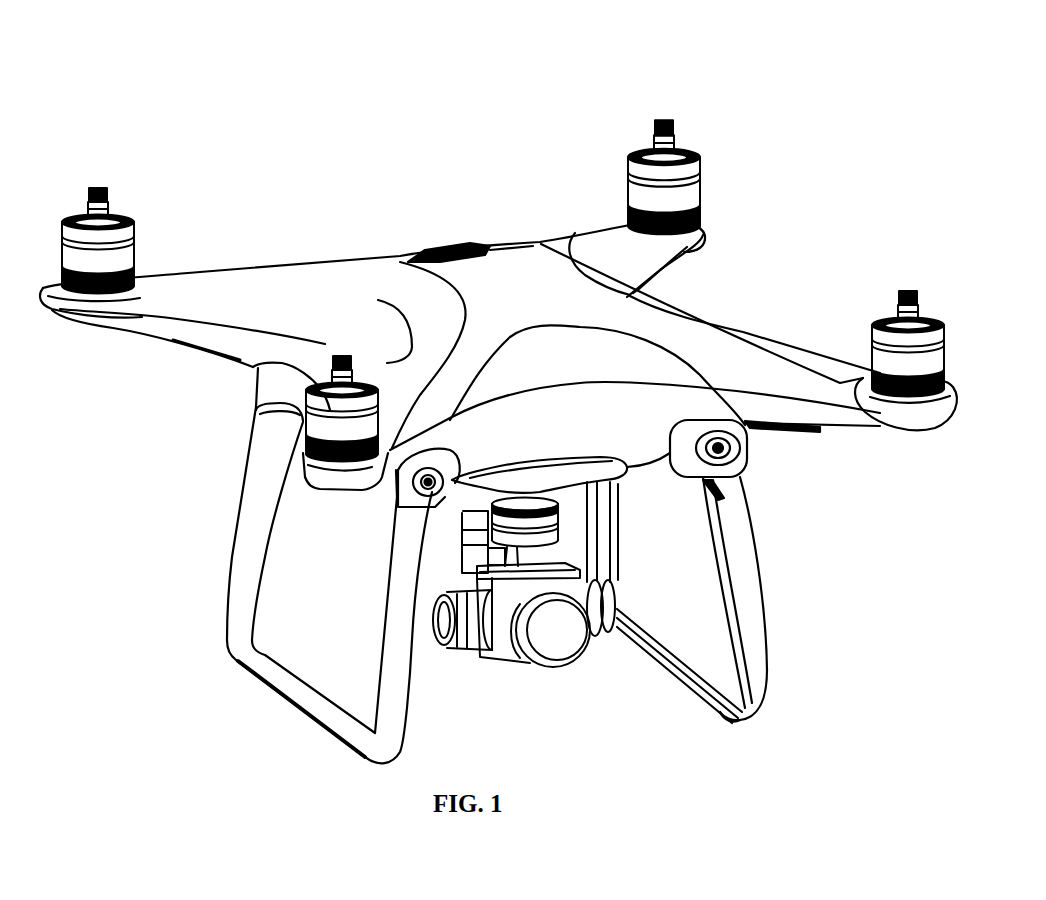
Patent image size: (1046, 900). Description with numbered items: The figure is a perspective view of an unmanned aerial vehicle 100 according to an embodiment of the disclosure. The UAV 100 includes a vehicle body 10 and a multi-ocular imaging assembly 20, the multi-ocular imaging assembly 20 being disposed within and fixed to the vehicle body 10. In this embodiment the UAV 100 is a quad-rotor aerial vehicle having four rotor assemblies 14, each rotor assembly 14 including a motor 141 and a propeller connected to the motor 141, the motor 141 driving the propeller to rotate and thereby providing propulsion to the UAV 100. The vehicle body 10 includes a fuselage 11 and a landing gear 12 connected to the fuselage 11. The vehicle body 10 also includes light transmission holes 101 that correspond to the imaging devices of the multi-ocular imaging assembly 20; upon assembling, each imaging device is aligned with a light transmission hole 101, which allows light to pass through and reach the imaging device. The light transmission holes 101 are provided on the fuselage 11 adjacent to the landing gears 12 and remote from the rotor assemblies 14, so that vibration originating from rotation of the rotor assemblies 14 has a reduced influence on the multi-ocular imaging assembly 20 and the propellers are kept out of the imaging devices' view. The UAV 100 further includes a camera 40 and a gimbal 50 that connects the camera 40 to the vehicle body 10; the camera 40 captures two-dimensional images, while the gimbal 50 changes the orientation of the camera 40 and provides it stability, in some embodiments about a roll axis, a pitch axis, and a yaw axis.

The unmanned aerial vehicle 100 is at (358, 56).
The vehicle body 10 is at (100, 364).
The fuselage 11 is at (230, 310).
The landing gear 12 is at (258, 492).
The rotor assembly 14 is at (697, 146).
The motor 141 is at (690, 197).
The light transmission hole 101 is at (740, 446).
The multi-ocular imaging assembly 20 is at (745, 457).
The camera 40 is at (555, 645).
The gimbal 50 is at (550, 516).